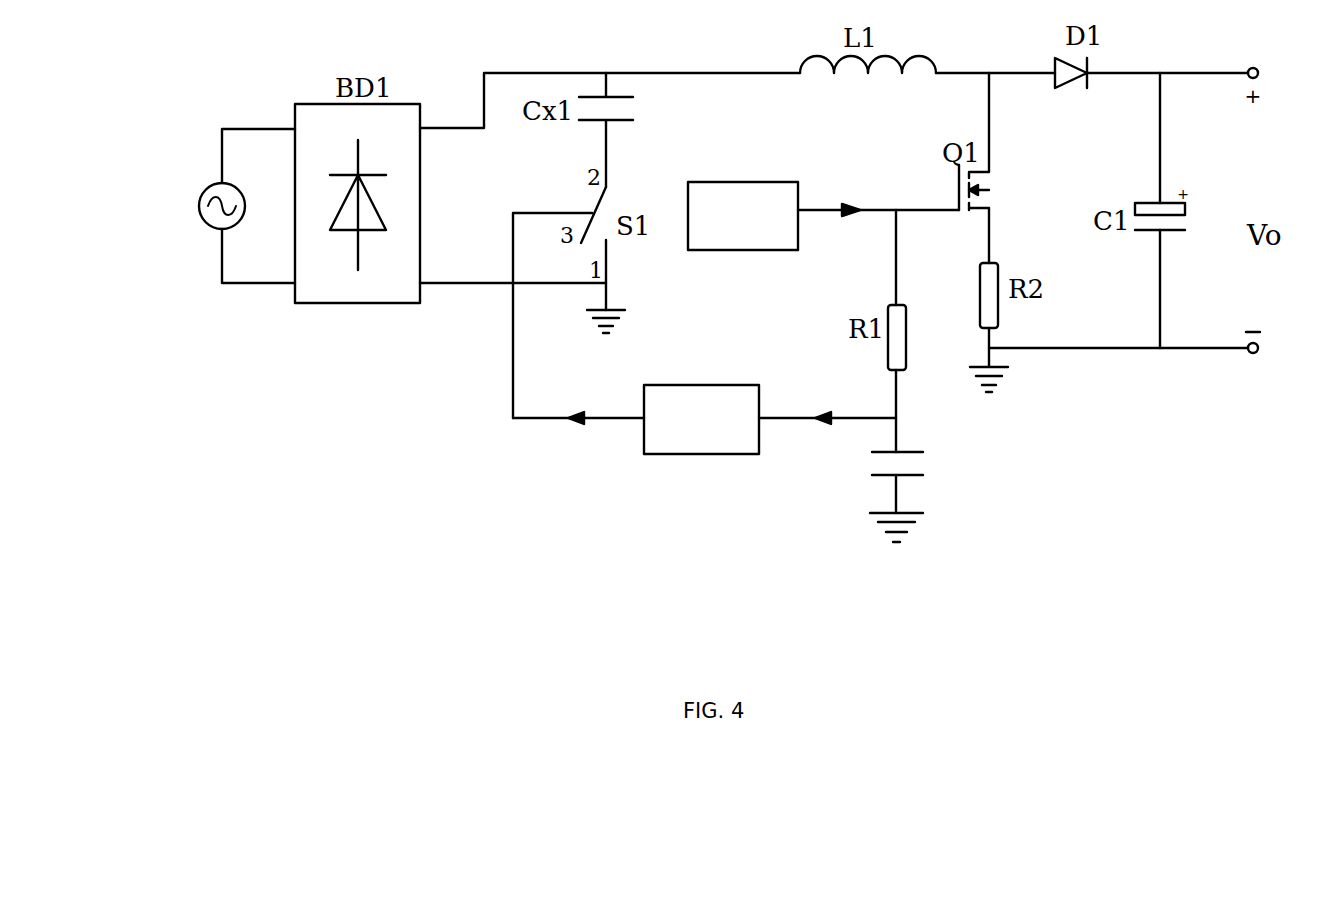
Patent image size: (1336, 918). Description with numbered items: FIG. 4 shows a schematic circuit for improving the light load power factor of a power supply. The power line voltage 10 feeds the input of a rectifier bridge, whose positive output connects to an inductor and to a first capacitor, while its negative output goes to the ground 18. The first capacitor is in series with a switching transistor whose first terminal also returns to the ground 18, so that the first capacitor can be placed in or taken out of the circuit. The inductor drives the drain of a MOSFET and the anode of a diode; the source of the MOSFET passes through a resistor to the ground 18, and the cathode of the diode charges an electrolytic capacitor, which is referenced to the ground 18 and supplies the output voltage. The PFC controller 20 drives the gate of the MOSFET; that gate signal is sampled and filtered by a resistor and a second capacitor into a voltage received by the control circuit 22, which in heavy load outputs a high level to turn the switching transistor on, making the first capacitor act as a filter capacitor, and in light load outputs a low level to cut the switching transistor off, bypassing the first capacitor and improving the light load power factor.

The power line voltage 10 is at (185, 262).
The ground 18 is at (915, 522).
The PFC controller 20 is at (730, 178).
The control circuit 22 is at (690, 455).